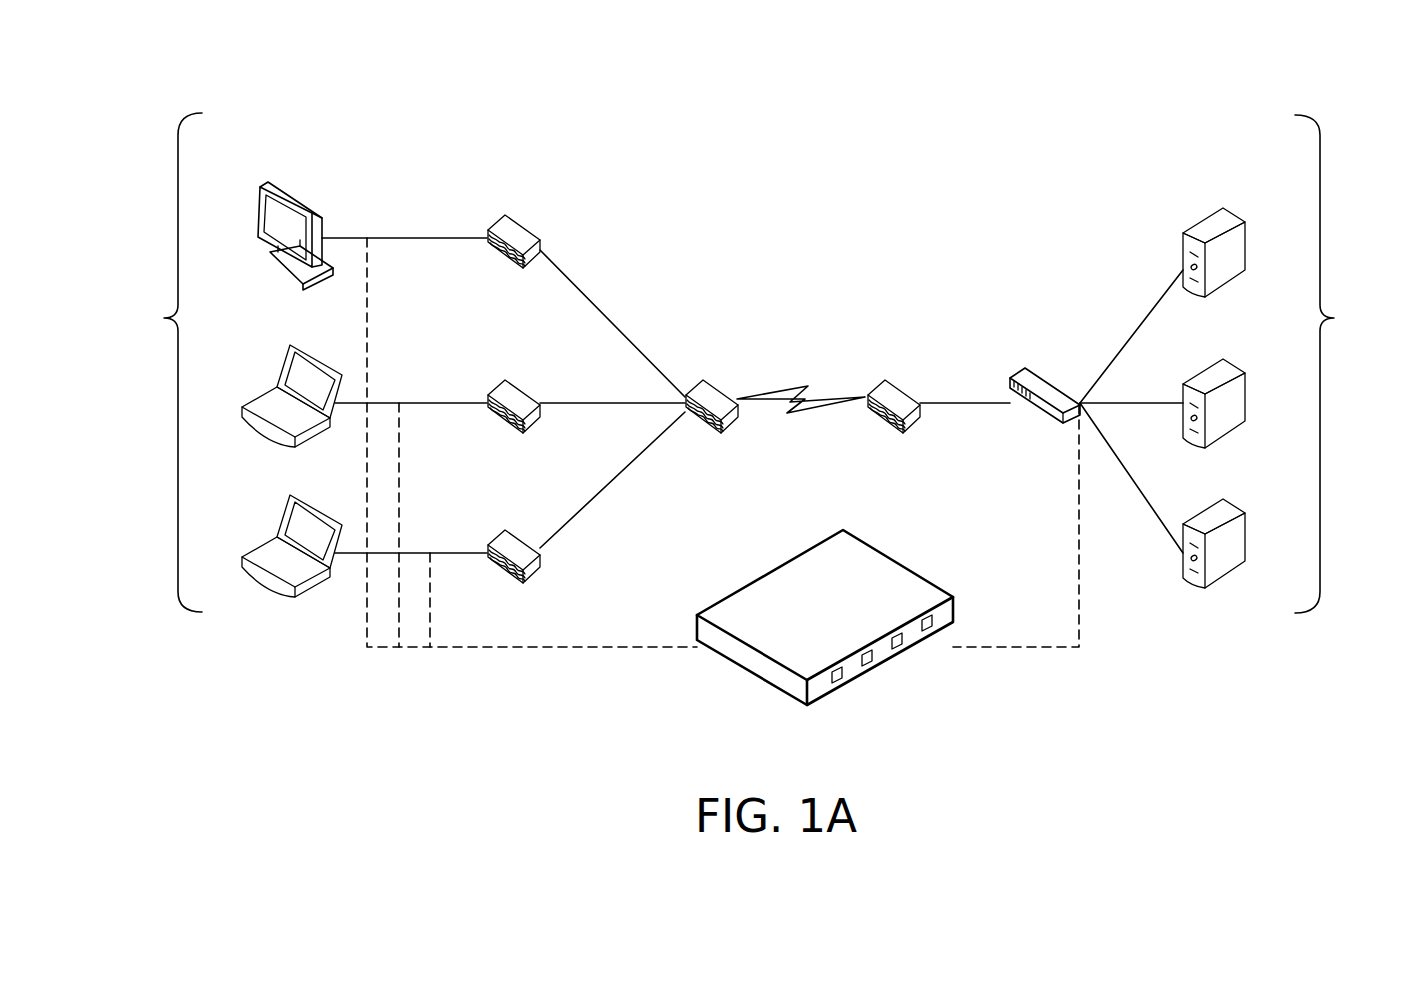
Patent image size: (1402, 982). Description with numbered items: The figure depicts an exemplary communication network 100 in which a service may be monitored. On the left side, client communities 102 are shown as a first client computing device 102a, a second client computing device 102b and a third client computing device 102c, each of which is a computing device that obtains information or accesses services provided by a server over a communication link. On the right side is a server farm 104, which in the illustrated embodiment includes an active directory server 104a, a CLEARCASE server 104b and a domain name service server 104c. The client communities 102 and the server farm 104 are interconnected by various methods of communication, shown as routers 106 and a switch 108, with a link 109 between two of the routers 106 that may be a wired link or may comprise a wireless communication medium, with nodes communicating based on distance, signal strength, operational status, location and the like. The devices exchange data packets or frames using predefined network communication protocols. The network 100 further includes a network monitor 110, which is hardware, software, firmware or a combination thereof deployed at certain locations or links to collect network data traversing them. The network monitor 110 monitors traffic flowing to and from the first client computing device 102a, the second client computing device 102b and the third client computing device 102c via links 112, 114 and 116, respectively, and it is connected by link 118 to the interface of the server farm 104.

The communication network 100 is at (1040, 120).
The client communities 102 is at (151, 362).
The first client computing device 102a is at (258, 196).
The second client computing device 102b is at (253, 400).
The third client computing device 102c is at (253, 550).
The server farm 104 is at (1343, 364).
The active directory server 104a is at (1240, 218).
The CLEARCASE server 104b is at (1240, 369).
The domain name service (DNS) server 104c is at (1240, 509).
The router 106 is at (520, 222).
The switch 108 is at (1043, 372).
The link 109 is at (826, 394).
The network monitor 110 is at (728, 593).
The link 112 is at (370, 280).
The link 114 is at (402, 455).
The link 116 is at (433, 600).
The link 118 is at (1076, 490).